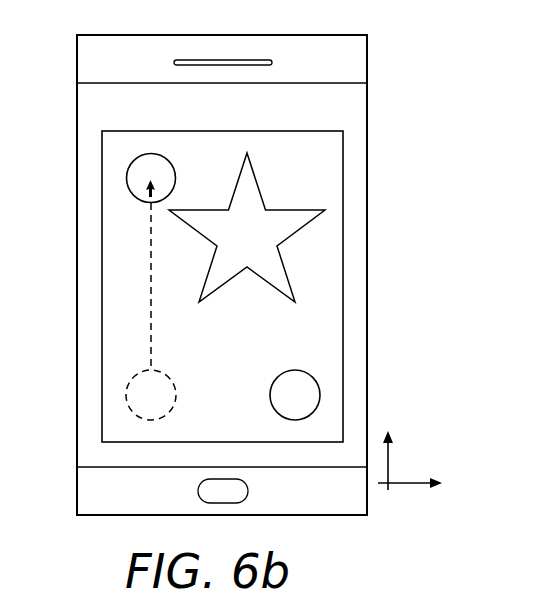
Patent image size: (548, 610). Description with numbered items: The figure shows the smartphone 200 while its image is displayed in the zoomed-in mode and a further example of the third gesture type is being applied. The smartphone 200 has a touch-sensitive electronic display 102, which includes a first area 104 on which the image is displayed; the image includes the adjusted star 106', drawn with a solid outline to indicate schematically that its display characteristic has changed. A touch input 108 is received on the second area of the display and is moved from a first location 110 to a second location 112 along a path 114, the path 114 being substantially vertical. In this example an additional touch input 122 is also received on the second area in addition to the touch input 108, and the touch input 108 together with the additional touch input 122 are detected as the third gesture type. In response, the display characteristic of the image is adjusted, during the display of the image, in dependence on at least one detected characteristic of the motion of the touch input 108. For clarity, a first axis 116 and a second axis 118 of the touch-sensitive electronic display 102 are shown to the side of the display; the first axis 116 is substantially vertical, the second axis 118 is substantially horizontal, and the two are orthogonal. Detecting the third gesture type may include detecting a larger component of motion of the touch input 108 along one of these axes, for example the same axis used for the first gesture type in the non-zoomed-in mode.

The smartphone 200 is at (183, 35).
The touch-sensitive electronic display 102 is at (367, 212).
The first area 104 is at (343, 312).
The adjusted star 106' is at (249, 227).
The touch input 108 is at (128, 182).
The first location 110 is at (170, 377).
The second location 112 is at (175, 172).
The path 114 is at (152, 337).
The first axis 116 is at (391, 434).
The second axis 118 is at (413, 478).
The additional touch input 122 is at (313, 376).